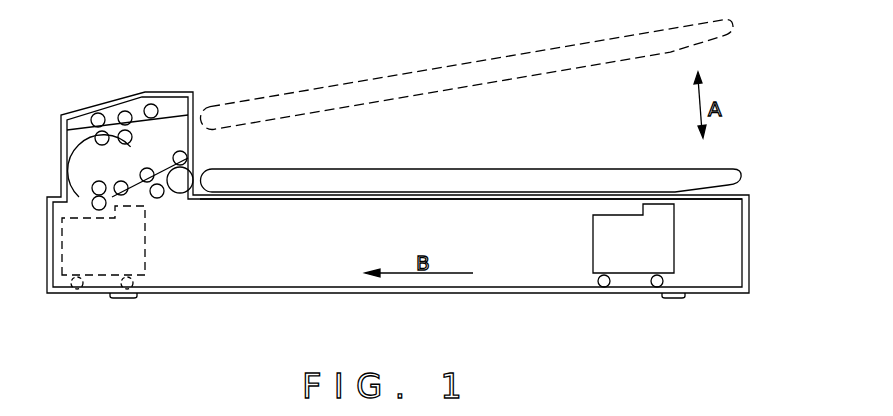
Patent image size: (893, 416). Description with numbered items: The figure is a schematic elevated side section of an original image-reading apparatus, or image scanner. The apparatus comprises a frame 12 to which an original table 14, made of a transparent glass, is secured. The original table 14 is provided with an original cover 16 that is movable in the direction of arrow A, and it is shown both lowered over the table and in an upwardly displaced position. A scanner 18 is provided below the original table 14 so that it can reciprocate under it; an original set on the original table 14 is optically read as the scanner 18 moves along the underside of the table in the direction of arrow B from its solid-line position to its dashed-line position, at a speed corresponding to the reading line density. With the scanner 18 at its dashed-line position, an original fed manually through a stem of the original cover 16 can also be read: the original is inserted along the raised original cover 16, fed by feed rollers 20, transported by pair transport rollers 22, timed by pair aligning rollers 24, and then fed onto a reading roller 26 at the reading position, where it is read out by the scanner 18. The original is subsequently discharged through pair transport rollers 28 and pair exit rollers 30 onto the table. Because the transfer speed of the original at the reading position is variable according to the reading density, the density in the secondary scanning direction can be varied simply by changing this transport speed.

The frame 12 is at (255, 294).
The original table 14 is at (390, 199).
The original cover 16 is at (567, 174).
The scanner 18 is at (674, 244).
The feed rollers 20 is at (139, 103).
The pair transport rollers 22 is at (93, 114).
The pair aligning rollers 24 is at (99, 210).
The reading roller 26 is at (118, 177).
The pair transport rollers 28 is at (150, 165).
The pair exit rollers 30 is at (184, 173).